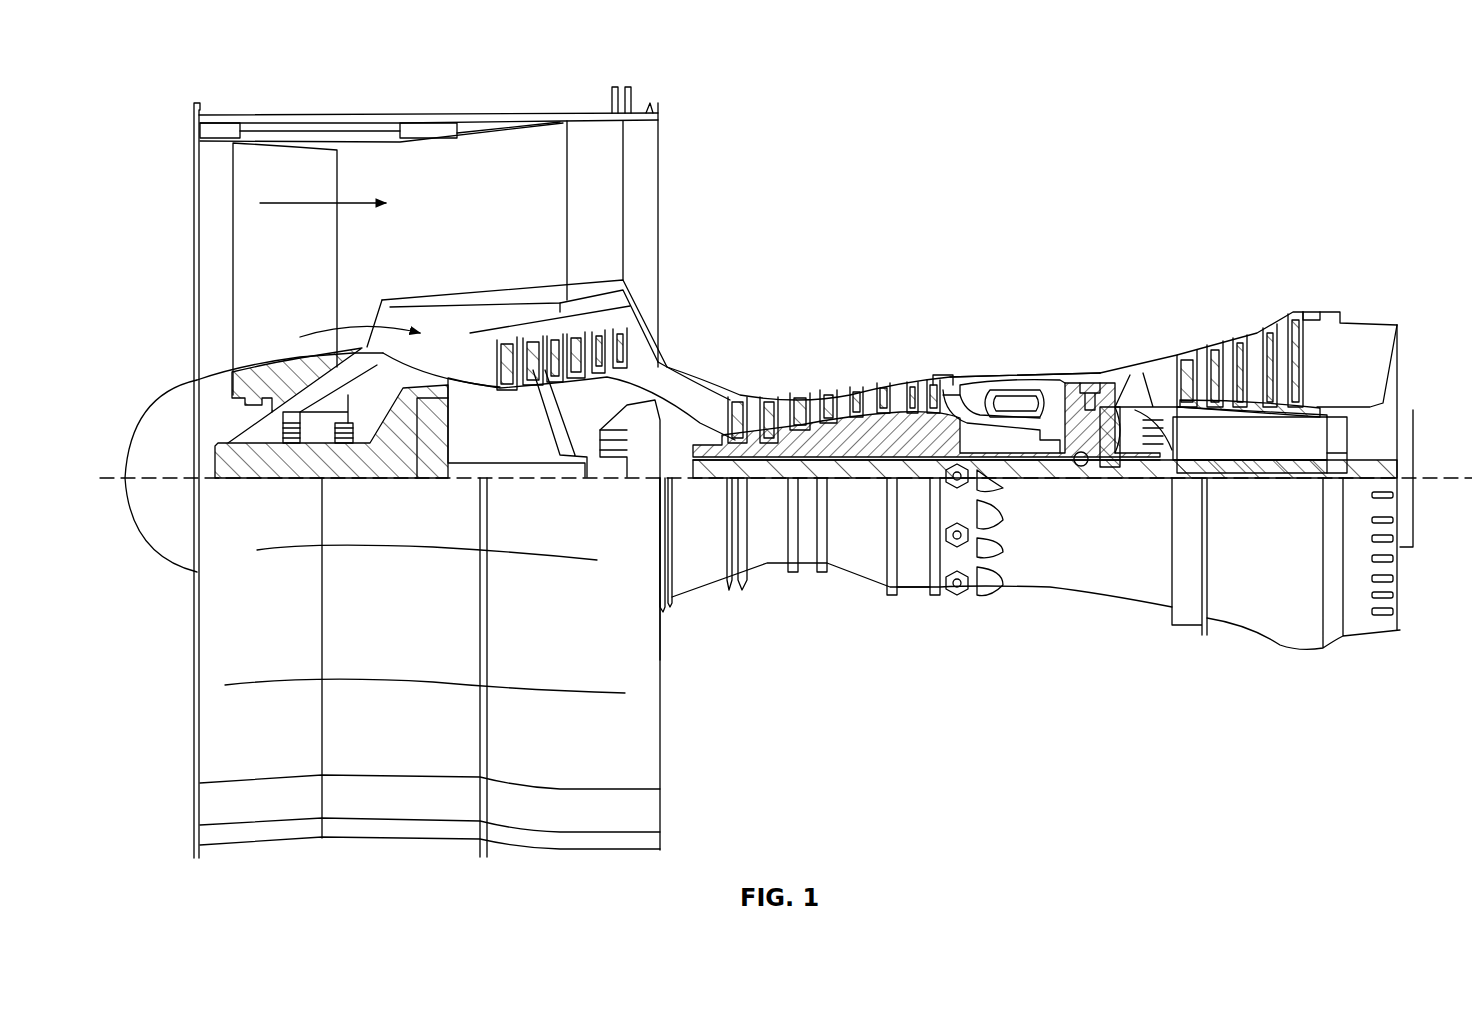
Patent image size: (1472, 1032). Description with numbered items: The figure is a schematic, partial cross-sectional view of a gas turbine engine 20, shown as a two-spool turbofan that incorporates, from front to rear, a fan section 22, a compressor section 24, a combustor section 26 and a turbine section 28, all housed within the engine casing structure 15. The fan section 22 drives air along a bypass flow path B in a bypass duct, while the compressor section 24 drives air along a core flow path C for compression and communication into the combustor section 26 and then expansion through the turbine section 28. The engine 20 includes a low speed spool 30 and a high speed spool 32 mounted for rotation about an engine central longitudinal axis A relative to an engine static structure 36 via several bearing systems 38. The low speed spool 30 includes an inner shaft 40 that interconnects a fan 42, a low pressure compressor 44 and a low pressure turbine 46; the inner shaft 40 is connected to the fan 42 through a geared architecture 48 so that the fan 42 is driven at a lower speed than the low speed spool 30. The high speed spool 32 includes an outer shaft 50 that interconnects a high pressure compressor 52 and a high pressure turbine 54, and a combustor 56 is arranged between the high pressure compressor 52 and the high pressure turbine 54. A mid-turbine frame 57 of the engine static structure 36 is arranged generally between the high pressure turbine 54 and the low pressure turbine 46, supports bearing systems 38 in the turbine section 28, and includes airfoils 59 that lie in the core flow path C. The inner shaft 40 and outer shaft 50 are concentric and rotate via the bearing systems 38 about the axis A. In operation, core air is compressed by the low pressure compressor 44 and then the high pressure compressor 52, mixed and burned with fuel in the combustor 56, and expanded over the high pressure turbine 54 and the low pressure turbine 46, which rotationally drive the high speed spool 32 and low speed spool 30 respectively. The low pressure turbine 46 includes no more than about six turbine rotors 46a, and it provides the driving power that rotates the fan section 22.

The gas turbine engine 20 is at (769, 453).
The fan section 22 is at (383, 96).
The fan case / nacelle 15 is at (433, 117).
The fan 42 is at (300, 251).
The compressor section 24 is at (710, 358).
The combustor section 26 is at (978, 328).
The turbine section 28 is at (1177, 308).
The low speed spool 30 is at (866, 482).
The high speed spool 32 is at (902, 442).
The engine static structure 36 is at (913, 600).
The bearing systems 38 is at (603, 462).
The inner shaft 40 is at (690, 488).
The low pressure compressor 44 is at (557, 353).
The low pressure turbine 46 is at (1255, 335).
The turbine rotors 46a is at (1283, 328).
The geared architecture 48 is at (437, 452).
The outer shaft 50 is at (1080, 466).
The high pressure compressor 52 is at (845, 383).
The high pressure turbine 54 is at (1093, 375).
The combustor 56 is at (1020, 398).
The mid-turbine frame 57 is at (1147, 366).
The airfoils 59 is at (1175, 420).
The engine central longitudinal axis A is at (1432, 472).
The bypass flow path B is at (313, 203).
The core flow path C is at (320, 327).